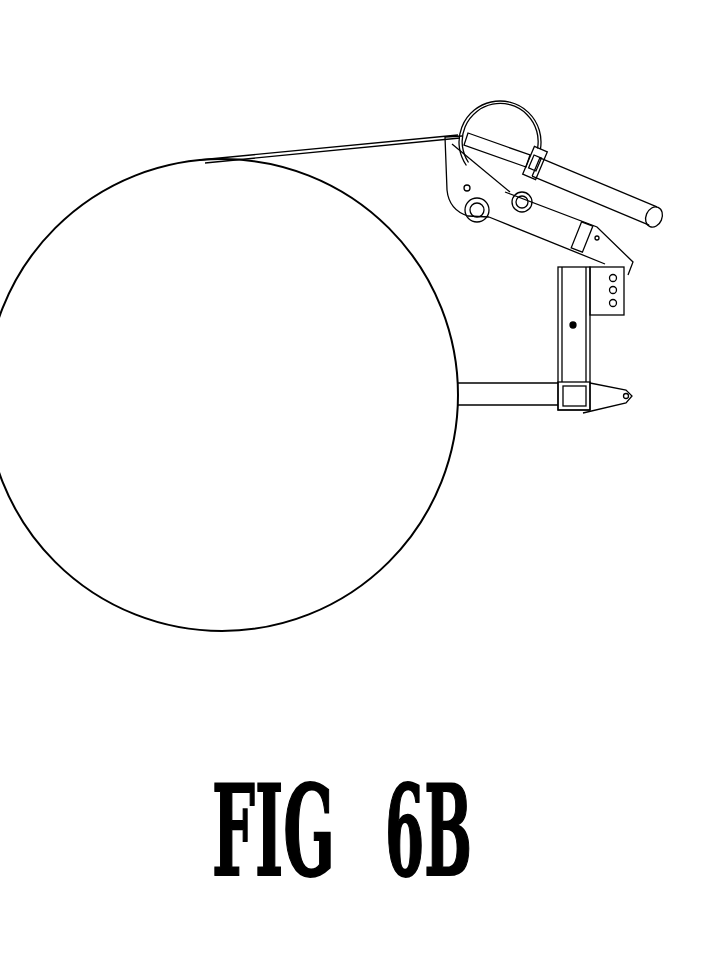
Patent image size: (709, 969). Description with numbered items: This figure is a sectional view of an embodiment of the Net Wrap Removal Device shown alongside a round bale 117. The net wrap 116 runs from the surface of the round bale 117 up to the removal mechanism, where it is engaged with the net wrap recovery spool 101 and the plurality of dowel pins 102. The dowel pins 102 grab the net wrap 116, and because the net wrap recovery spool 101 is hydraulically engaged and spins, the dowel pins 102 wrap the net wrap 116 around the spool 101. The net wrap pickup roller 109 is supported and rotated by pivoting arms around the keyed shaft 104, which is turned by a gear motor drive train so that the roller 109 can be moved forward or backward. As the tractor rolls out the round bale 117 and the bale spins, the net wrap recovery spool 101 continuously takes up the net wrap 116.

The net wrap recovery spool 101 is at (520, 200).
The dowel pins 102 is at (543, 166).
The keyed shaft 104 is at (477, 205).
The net wrap pickup roller 109 is at (656, 218).
The net wrap 116 is at (320, 150).
The round bale 117 is at (422, 517).